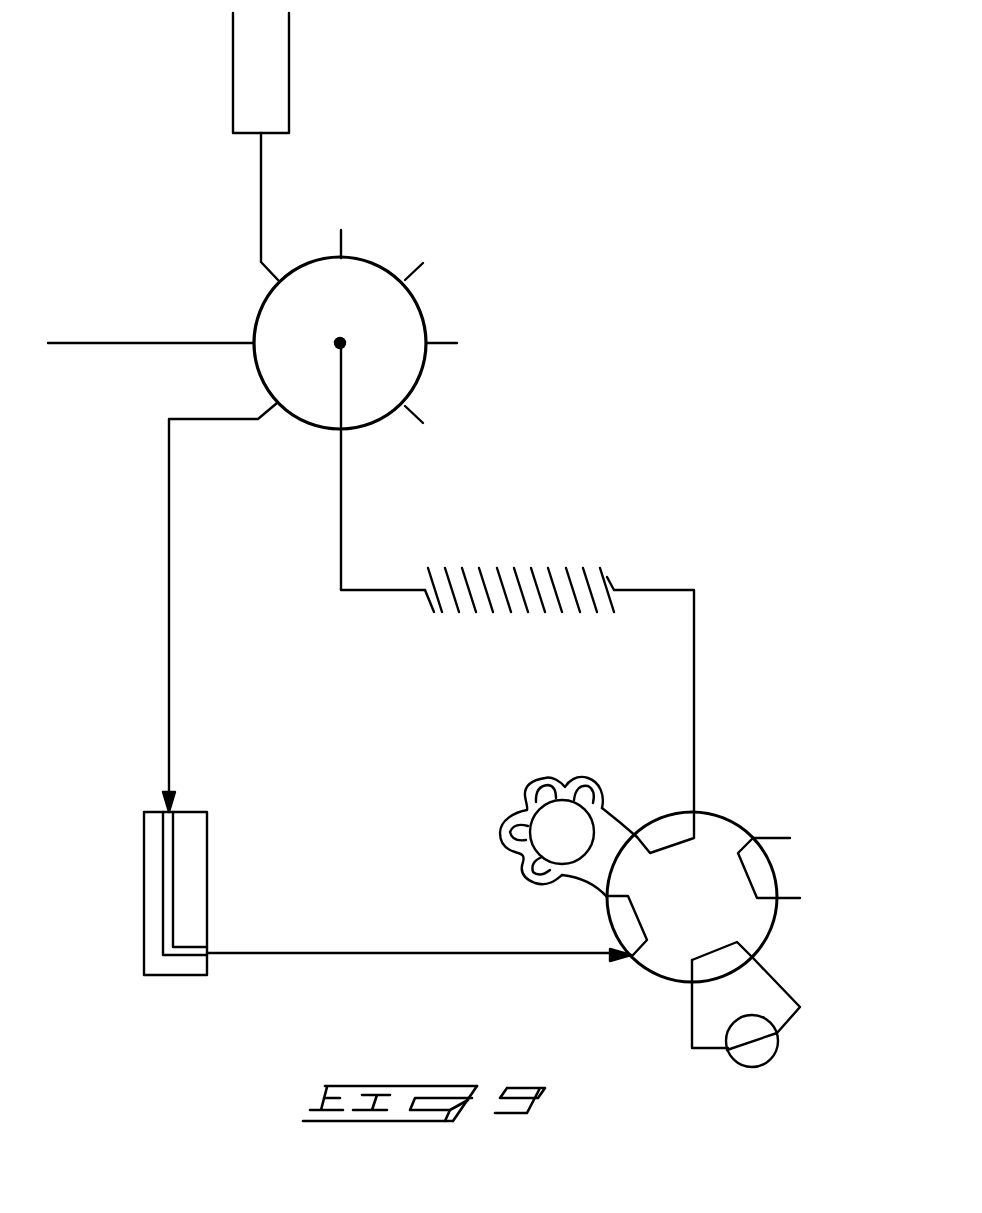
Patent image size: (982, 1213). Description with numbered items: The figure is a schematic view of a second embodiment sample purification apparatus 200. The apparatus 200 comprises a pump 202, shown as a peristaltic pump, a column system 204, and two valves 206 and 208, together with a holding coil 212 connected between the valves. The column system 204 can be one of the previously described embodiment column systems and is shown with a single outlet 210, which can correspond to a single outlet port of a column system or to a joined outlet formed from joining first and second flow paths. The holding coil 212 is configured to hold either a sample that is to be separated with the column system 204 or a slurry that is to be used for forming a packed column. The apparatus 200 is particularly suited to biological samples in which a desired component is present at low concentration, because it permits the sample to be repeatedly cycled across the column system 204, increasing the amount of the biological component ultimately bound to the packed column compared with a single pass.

The sample purification apparatus 200 is at (603, 100).
The pump 202 is at (530, 812).
The column system 204 is at (222, 875).
The valve 206 is at (393, 323).
The valve 208 is at (753, 920).
The single outlet 210 is at (422, 955).
The holding coil 212 is at (507, 575).